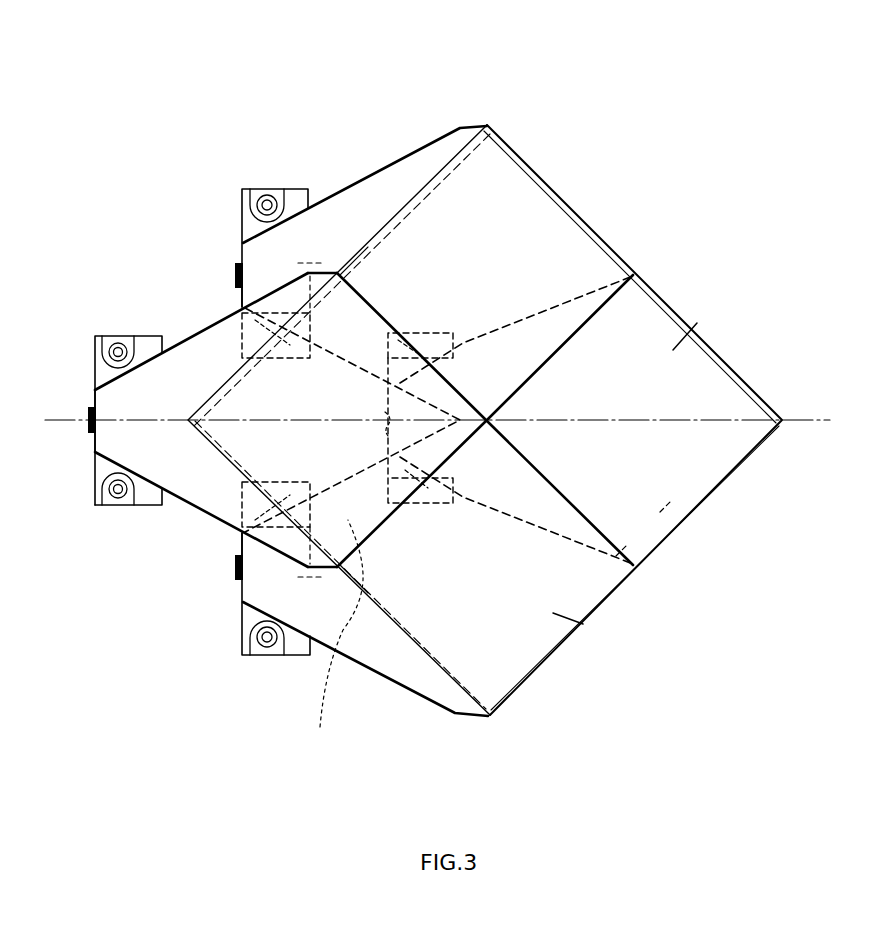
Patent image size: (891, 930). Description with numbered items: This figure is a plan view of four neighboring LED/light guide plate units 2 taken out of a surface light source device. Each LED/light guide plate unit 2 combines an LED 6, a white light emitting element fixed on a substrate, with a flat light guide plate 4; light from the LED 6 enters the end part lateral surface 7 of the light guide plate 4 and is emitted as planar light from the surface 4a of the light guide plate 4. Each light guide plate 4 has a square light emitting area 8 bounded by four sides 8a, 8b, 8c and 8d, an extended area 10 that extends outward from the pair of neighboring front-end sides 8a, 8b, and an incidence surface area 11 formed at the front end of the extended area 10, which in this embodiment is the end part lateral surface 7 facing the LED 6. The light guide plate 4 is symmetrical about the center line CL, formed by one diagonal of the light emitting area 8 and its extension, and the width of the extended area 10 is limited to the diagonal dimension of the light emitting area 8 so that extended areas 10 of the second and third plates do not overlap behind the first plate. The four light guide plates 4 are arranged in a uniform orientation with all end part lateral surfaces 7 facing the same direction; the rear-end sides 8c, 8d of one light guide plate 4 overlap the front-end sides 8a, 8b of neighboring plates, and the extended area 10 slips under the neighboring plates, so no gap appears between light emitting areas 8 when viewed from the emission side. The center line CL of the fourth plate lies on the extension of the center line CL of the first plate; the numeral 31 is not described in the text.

The LED/light guide plate unit 2 is at (260, 187).
The light guide plate 4 is at (383, 188).
The surface of light guide plate 4a is at (520, 197).
The light emitting area 8 is at (446, 412).
The LED 6 is at (233, 270).
The end part lateral surface 7 is at (93, 430).
The side of light emitting area 8a is at (453, 403).
The side of light emitting area 8b is at (367, 247).
The side of light emitting area 8c is at (505, 147).
The side of light emitting area 8d is at (508, 305).
The extended area 10 is at (443, 153).
The incidence surface area 11 is at (211, 505).
The edge 31 is at (553, 658).
The center line CL is at (807, 420).